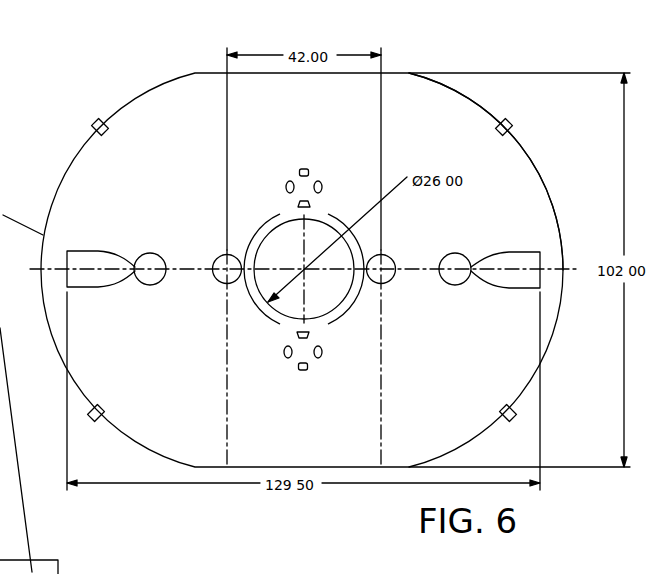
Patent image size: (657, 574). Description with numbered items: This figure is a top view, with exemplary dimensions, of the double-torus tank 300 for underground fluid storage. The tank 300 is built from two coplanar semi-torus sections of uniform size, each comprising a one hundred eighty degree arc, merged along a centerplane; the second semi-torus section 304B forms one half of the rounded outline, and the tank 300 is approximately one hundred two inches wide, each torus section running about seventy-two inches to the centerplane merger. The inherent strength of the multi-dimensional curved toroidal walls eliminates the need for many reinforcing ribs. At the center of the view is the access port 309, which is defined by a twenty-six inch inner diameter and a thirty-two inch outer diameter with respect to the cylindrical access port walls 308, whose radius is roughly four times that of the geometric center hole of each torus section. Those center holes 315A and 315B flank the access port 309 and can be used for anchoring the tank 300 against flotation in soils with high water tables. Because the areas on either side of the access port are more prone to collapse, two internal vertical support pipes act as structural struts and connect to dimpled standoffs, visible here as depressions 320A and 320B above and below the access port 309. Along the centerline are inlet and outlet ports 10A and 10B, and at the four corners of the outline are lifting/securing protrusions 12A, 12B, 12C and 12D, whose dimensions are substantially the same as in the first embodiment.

The double-torus tank 300 is at (69, 100).
The second coplanar semi-torus section 304B is at (462, 117).
The lifting/securing protrusion 12A is at (93, 419).
The lifting/securing protrusion 12B is at (513, 419).
The lifting/securing protrusion 12C is at (86, 128).
The lifting/securing protrusion 12D is at (518, 130).
The inlet and outlet port 10A is at (104, 251).
The inlet and outlet port 10B is at (508, 252).
The access port walls 308 is at (338, 220).
The access port 309 is at (268, 243).
The center hole 315A is at (223, 282).
The center hole 315B is at (392, 283).
The dimpled standoff 320A is at (290, 352).
The dimpled standoff 320B is at (290, 184).